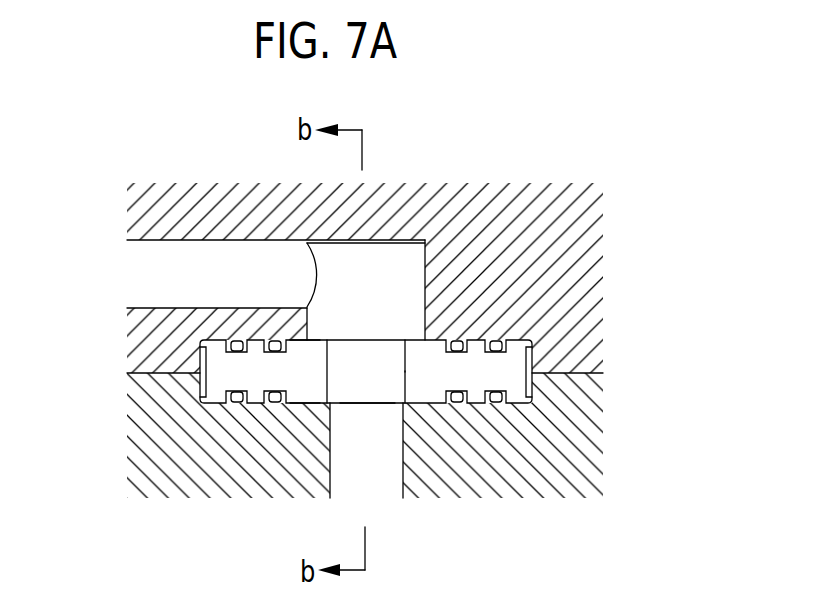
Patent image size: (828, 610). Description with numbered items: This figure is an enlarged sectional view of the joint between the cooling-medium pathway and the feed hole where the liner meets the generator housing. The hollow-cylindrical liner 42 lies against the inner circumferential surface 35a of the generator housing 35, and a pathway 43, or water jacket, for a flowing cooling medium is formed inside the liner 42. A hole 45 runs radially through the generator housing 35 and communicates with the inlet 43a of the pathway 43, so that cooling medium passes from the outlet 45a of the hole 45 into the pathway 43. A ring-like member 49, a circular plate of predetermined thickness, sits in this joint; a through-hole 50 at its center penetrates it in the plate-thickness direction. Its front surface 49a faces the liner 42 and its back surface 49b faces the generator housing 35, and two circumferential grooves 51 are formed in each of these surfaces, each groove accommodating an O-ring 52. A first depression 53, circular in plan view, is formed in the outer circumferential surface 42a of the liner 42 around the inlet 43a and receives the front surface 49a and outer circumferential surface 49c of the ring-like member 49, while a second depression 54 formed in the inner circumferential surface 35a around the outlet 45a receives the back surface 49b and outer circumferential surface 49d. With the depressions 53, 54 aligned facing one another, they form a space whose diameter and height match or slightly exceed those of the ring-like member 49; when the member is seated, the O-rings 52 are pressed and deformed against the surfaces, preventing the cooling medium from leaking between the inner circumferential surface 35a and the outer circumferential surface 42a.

The generator housing 35 is at (577, 453).
The inner circumferential surface of the generator housing 35a is at (592, 364).
The liner 42 is at (585, 241).
The outer circumferential surface of the liner 42a is at (133, 374).
The pathway 43 is at (147, 268).
The inlet of the pathway 43a is at (375, 337).
The hole 45 is at (388, 497).
The outlet of the hole 45a is at (370, 407).
The ring-like member 49 is at (198, 393).
The front surface of the ring-like member 49a is at (318, 337).
The back surface of the ring-like member 49b is at (300, 405).
The outer circumferential surface of the ring-like member 49c is at (201, 350).
The outer circumferential surface of the ring-like member 49d is at (531, 386).
The through-hole 50 is at (400, 376).
The circumferential groove 51 is at (493, 342).
The O-ring 52 is at (455, 342).
The first depression 53 is at (528, 364).
The second depression 54 is at (205, 366).